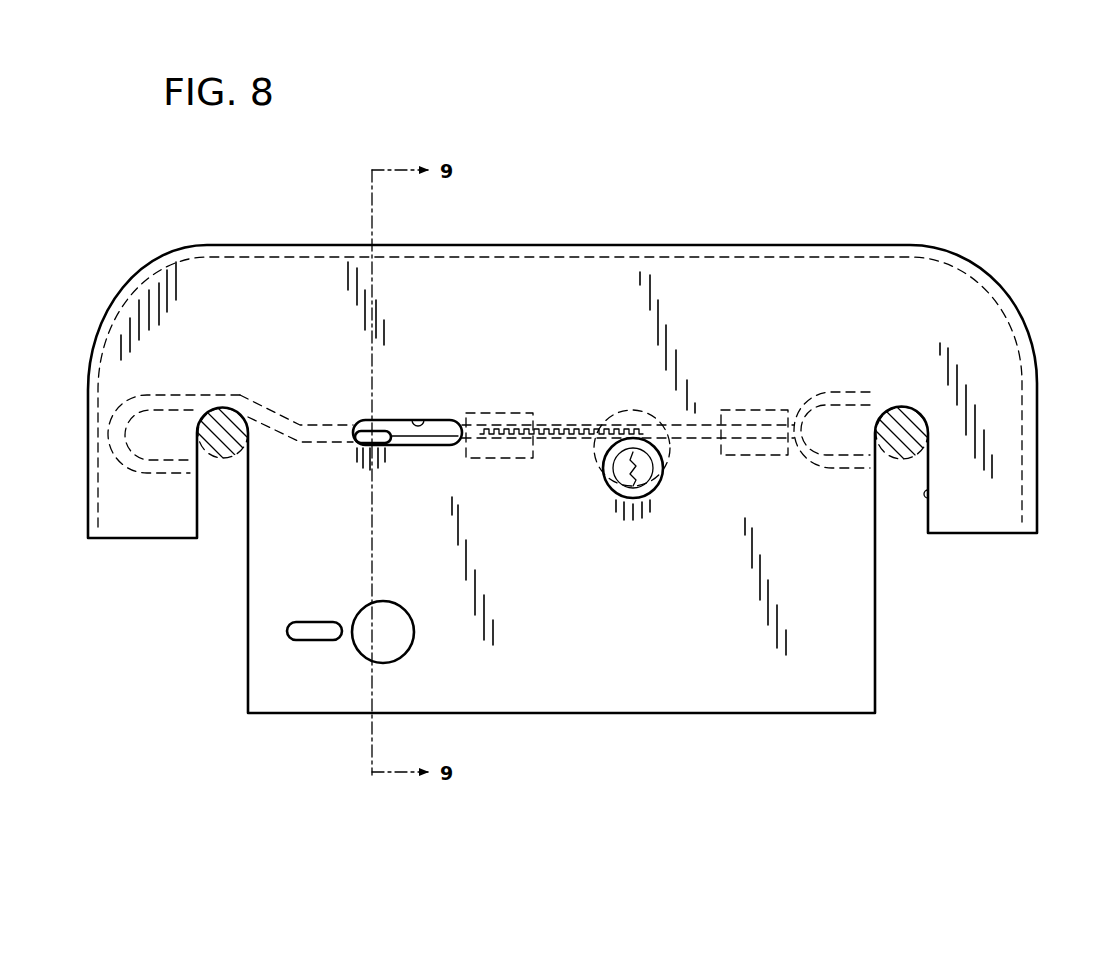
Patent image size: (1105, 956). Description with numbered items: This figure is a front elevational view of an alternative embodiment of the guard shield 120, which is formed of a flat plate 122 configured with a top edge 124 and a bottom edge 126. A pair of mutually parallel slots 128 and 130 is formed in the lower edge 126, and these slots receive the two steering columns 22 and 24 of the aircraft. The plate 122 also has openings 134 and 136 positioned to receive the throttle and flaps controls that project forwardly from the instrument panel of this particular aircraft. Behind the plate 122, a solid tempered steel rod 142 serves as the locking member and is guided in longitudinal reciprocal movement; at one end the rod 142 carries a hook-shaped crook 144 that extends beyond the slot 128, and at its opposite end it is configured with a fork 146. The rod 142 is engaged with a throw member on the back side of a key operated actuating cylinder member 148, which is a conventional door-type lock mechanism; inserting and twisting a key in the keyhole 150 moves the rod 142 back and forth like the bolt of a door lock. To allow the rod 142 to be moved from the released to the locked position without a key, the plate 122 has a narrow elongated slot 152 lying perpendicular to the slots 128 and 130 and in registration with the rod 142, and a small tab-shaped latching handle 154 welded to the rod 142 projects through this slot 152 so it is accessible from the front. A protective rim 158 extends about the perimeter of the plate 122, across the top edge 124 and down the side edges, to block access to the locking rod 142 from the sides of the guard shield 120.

The guard shield 120 is at (843, 228).
The plate 122 is at (674, 693).
The top edge 124 is at (563, 243).
The bottom edge 126 is at (782, 713).
The slot 128 is at (248, 500).
The slot 130 is at (928, 494).
The opening 134 is at (410, 632).
The opening 136 is at (320, 628).
The tempered steel rod 142 is at (465, 432).
The hook-shaped crook 144 is at (185, 395).
The fork 146 is at (840, 392).
The key operated actuating cylinder member 148 is at (645, 467).
The keyhole 150 is at (627, 465).
The elongated slot 152 is at (418, 432).
The latching handle 154 is at (380, 433).
The protective rim 158 is at (1040, 383).
The steering column 22 is at (222, 460).
The steering column 24 is at (903, 458).